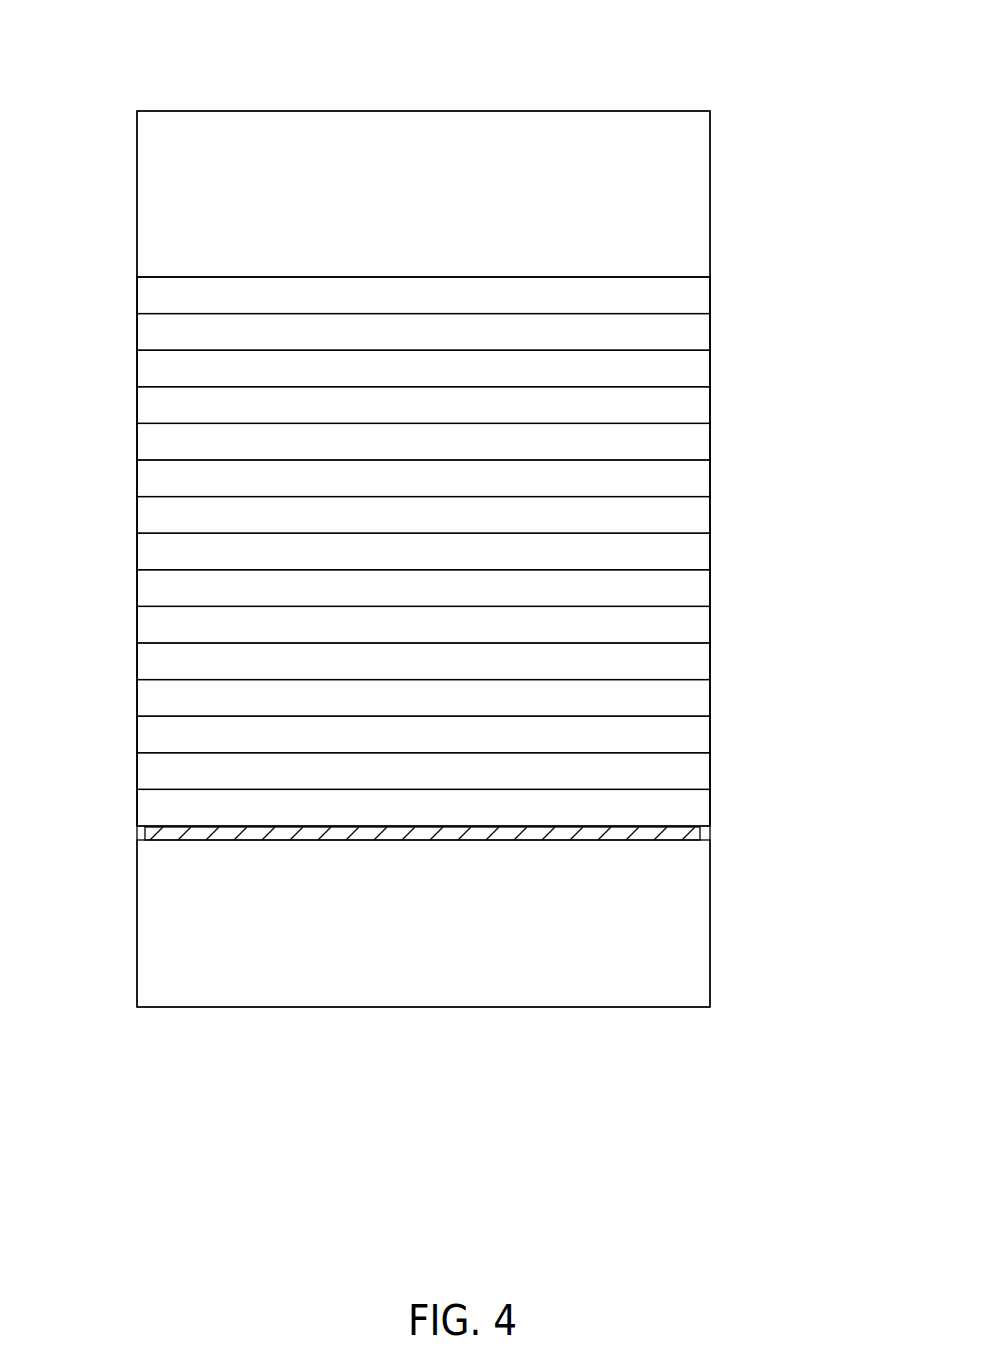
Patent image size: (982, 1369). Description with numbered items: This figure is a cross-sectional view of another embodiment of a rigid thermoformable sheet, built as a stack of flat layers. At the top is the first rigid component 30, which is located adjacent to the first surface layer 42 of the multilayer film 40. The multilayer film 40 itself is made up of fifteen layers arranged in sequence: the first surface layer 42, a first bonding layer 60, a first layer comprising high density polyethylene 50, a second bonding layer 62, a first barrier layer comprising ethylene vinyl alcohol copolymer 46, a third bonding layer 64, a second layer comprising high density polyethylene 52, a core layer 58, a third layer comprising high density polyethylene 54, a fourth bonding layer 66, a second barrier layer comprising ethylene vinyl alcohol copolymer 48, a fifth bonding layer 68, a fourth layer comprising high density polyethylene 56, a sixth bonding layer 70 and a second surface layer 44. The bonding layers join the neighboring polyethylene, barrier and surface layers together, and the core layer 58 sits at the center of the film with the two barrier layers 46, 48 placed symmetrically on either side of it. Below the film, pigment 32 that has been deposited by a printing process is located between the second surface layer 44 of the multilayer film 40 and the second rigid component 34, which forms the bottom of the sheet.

The first rigid component 30 is at (710, 185).
The multilayer film 40 is at (119, 277).
The first surface layer 42 is at (710, 295).
The first bonding layer 60 is at (710, 332).
The first layer comprising high density polyethylene (HDPE) 50 is at (710, 368).
The second bonding layer 62 is at (710, 405).
The first barrier layer comprising ethylene vinyl alcohol copolymer (EVOH) 46 is at (710, 442).
The third bonding layer 64 is at (710, 478).
The second layer comprising HDPE 52 is at (710, 515).
The core layer 58 is at (710, 552).
The third layer comprising HDPE 54 is at (710, 588).
The fourth bonding layer 66 is at (710, 625).
The second barrier layer comprising EVOH 48 is at (710, 661).
The fifth bonding layer 68 is at (710, 698).
The fourth layer comprising HDPE 56 is at (710, 734).
The sixth bonding layer 70 is at (710, 771).
The second surface layer 44 is at (710, 808).
The pigment 32 is at (700, 833).
The second rigid component 34 is at (710, 937).